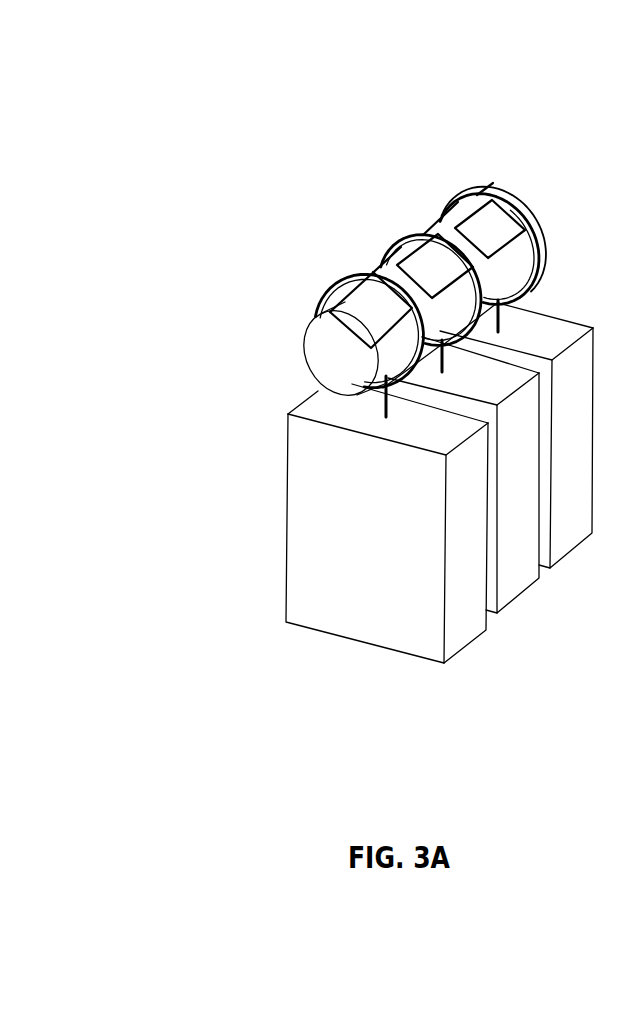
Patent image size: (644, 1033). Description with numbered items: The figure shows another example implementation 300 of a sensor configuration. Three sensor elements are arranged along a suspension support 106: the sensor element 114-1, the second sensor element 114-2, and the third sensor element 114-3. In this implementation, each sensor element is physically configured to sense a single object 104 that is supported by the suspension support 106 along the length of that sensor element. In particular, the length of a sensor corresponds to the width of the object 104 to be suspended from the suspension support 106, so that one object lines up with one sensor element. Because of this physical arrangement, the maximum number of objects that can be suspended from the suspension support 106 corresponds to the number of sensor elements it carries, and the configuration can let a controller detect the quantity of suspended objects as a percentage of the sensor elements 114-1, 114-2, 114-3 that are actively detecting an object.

The example implementation 300 is at (214, 35).
The object 104 is at (266, 533).
The suspension support 106 is at (386, 284).
The sensor element 114-1 is at (307, 331).
The second sensor element 114-2 is at (532, 206).
The third sensor element 114-3 is at (424, 261).